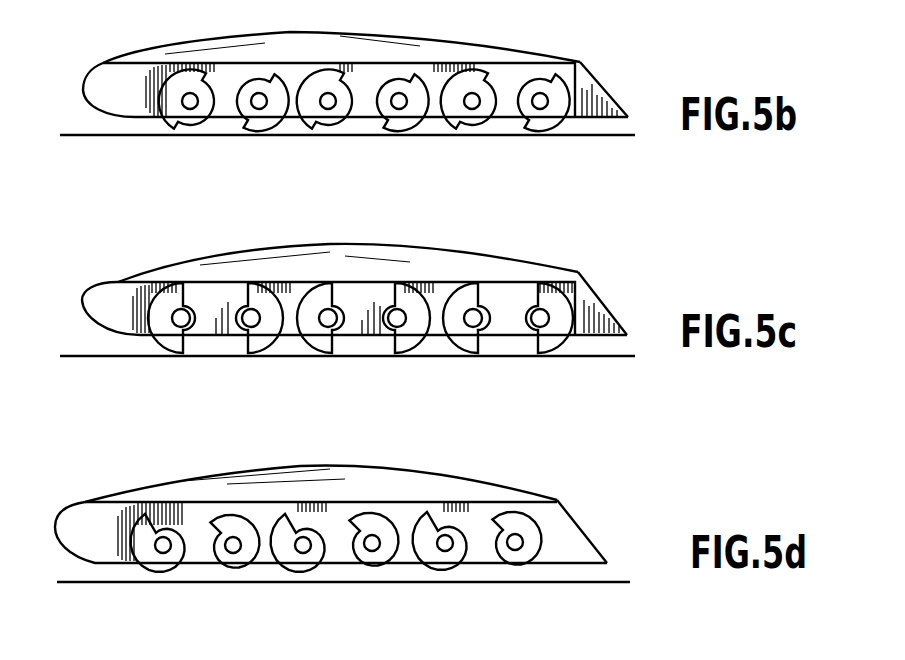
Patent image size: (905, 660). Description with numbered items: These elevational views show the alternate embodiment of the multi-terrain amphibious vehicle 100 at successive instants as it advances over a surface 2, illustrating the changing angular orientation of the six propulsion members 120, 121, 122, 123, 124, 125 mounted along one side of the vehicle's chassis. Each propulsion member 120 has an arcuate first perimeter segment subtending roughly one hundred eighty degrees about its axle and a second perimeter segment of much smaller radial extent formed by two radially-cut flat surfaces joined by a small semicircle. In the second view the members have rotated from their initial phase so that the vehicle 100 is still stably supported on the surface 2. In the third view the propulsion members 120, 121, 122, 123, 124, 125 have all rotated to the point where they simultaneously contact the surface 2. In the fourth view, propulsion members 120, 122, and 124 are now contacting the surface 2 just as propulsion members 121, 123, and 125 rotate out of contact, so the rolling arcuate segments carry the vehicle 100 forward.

In FIG. 5B, the surface 2 is at (418, 120).
In FIG. 5C, the surface 2 is at (385, 326).
In FIG. 5D, the surface 2 is at (364, 537).
In FIG. 5B, the multi-terrain amphibious vehicle 100 is at (613, 95).
In FIG. 5C, the multi-terrain amphibious vehicle 100 is at (588, 278).
In FIG. 5D, the multi-terrain amphibious vehicle 100 is at (567, 515).
In FIG. 5B, the propulsion member 120 is at (163, 118).
In FIG. 5C, the propulsion member 120 is at (172, 336).
In FIG. 5D, the propulsion member 120 is at (158, 562).
In FIG. 5B, the propulsion member 121 is at (265, 118).
In FIG. 5C, the propulsion member 121 is at (265, 336).
In FIG. 5D, the propulsion member 121 is at (252, 553).
In FIG. 5B, the propulsion member 122 is at (316, 118).
In FIG. 5C, the propulsion member 122 is at (310, 328).
In FIG. 5D, the propulsion member 122 is at (303, 563).
In FIG. 5B, the propulsion member 123 is at (393, 123).
In FIG. 5C, the propulsion member 123 is at (412, 327).
In FIG. 5D, the propulsion member 123 is at (397, 558).
In FIG. 5B, the propulsion member 124 is at (475, 80).
In FIG. 5C, the propulsion member 124 is at (458, 300).
In FIG. 5D, the propulsion member 124 is at (450, 562).
In FIG. 5B, the propulsion member 125 is at (567, 93).
In FIG. 5C, the propulsion member 125 is at (562, 318).
In FIG. 5D, the propulsion member 125 is at (533, 547).